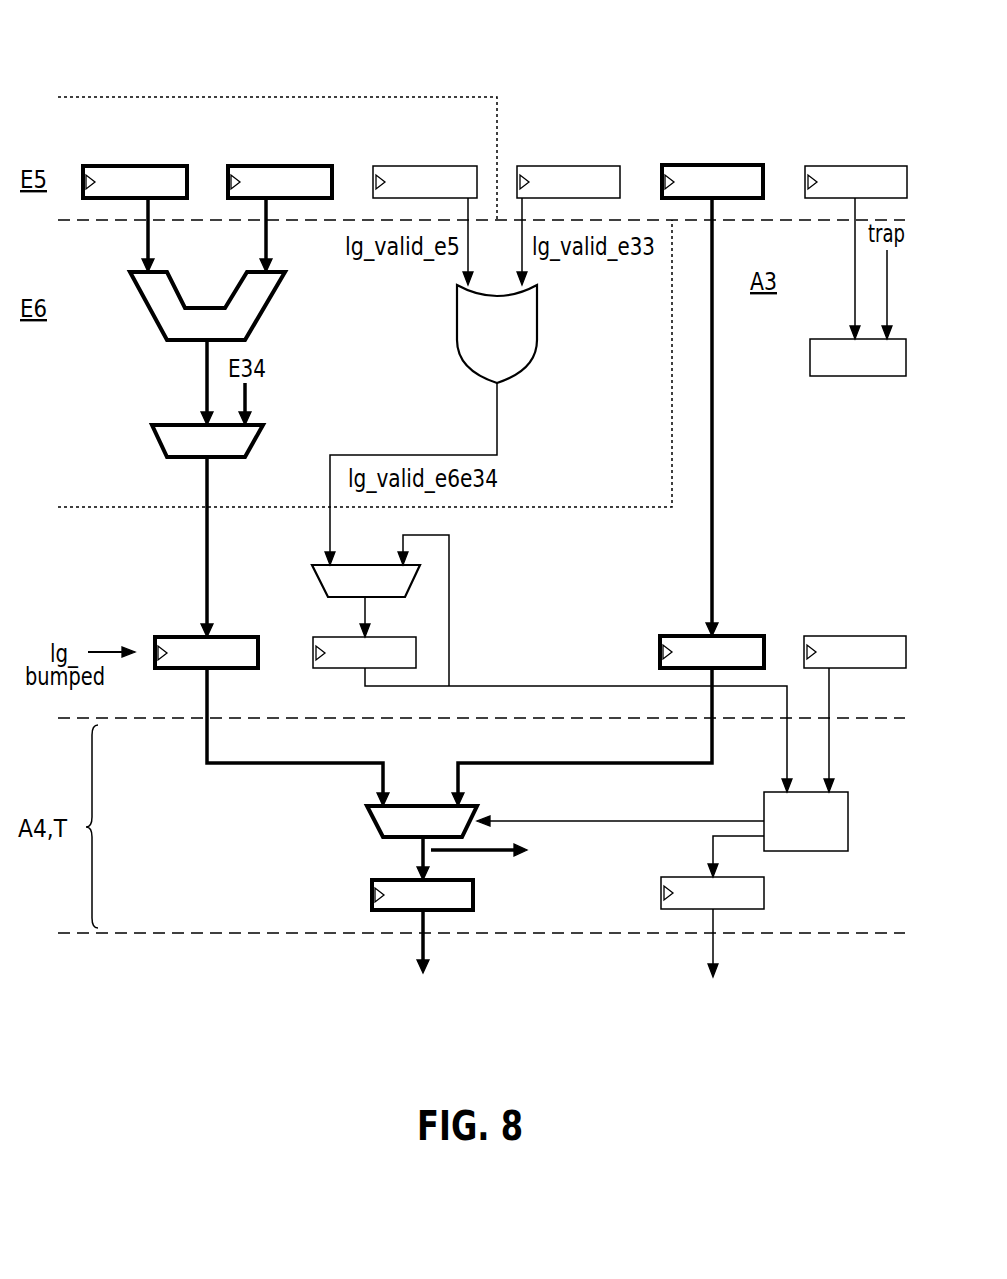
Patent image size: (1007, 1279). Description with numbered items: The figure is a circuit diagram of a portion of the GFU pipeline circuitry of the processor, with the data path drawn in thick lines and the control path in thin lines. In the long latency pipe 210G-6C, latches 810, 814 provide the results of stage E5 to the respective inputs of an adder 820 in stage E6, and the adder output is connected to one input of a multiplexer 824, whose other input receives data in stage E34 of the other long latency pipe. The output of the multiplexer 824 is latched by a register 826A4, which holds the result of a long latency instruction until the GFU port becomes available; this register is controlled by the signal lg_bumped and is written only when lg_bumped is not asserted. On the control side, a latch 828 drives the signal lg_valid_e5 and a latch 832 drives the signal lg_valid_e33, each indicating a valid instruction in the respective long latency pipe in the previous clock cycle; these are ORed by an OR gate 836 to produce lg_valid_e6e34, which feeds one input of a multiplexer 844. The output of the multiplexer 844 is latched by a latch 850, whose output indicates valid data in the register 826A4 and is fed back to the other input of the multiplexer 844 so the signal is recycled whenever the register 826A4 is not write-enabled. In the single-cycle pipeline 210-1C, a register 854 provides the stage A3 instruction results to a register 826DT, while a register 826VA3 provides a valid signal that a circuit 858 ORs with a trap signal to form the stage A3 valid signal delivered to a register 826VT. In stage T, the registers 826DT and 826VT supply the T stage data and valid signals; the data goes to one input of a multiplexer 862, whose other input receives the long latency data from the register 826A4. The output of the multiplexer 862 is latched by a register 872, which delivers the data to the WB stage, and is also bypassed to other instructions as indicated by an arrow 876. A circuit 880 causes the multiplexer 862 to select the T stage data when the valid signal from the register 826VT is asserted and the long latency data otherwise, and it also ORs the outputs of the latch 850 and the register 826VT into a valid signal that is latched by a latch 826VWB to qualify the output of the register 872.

The pipe 210G-6C is at (233, 84).
The pipeline 210-1C is at (786, 110).
The latch 810 is at (152, 165).
The latch 814 is at (297, 165).
The adder 820 is at (160, 318).
The multiplexer 824 is at (168, 440).
The latch 828 is at (440, 165).
The latch 832 is at (583, 165).
The OR gate 836 is at (463, 307).
The multiplexer 844 is at (328, 582).
The latch 850 is at (345, 660).
The register 854 is at (726, 165).
The circuit 858 is at (858, 357).
The multiplexer 862 is at (385, 815).
The register 872 is at (465, 897).
The arrow 876 is at (500, 848).
The circuit 880 is at (662, 781).
The register 826A4 is at (176, 640).
The register 826DT is at (684, 640).
The register 826VT is at (832, 640).
The register 826VA3 is at (869, 165).
The latch 826VWB is at (755, 897).